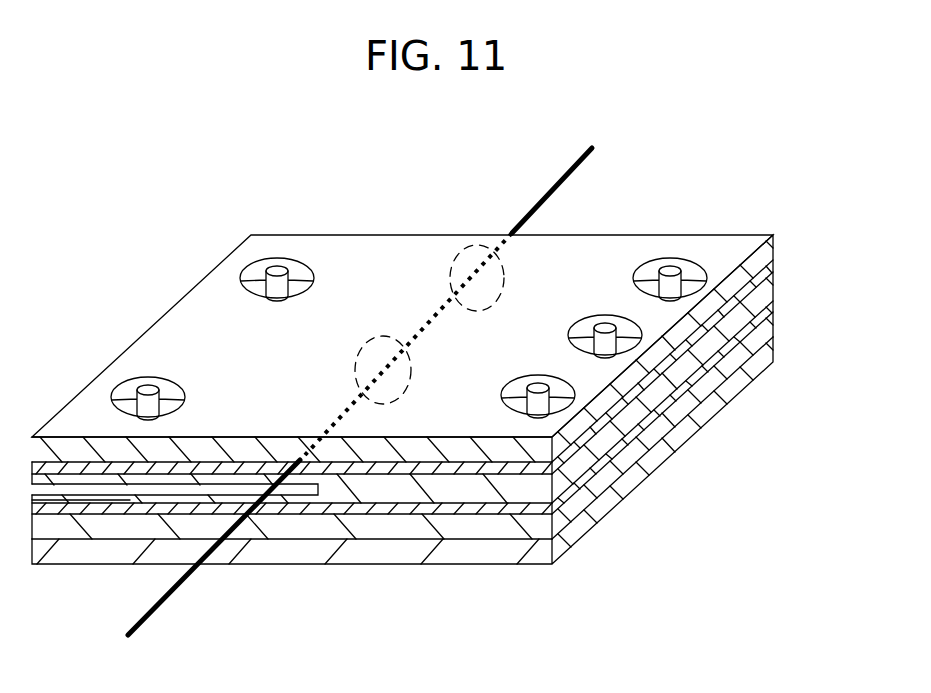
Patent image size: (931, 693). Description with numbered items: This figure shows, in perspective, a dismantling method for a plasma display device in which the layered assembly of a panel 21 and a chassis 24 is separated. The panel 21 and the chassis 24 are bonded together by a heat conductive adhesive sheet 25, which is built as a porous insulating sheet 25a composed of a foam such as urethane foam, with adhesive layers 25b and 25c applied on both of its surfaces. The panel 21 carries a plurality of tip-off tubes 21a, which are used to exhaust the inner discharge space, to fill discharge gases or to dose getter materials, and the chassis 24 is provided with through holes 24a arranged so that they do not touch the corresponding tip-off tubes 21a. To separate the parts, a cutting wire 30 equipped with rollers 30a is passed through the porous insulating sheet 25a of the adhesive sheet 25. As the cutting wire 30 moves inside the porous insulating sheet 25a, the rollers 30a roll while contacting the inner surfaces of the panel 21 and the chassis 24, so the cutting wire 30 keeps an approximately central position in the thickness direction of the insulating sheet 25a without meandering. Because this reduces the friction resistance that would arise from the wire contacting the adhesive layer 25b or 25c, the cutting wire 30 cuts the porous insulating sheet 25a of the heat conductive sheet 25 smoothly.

The panel 21 is at (473, 557).
The tip-off tubes 21a is at (277, 271).
The chassis 24 is at (582, 247).
The through holes 24a is at (692, 270).
The adhesive sheet 25 is at (458, 410).
The porous insulating sheet 25a is at (705, 400).
The adhesive layer 25b is at (625, 492).
The adhesive layer 25c is at (720, 380).
The cutting wire 30 is at (530, 212).
The rollers 30a is at (370, 345).